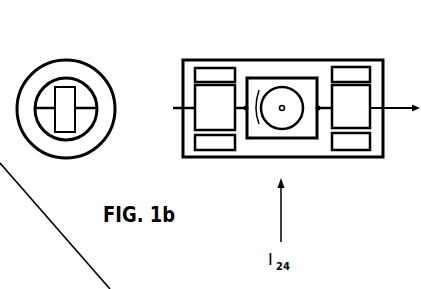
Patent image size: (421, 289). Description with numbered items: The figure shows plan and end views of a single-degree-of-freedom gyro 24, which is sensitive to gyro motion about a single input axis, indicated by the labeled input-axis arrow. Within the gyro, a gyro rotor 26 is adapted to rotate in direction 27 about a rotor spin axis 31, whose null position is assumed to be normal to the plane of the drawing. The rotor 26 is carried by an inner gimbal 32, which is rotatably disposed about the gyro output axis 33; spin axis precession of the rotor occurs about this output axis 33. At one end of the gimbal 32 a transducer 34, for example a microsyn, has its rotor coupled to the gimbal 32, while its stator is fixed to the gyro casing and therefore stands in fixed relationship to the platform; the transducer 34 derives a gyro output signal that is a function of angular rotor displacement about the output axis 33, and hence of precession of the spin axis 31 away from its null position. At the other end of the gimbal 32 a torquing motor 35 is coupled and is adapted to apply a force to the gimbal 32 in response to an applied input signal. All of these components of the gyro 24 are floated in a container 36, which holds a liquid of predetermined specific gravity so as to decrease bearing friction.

The gyro 24 is at (76, 46).
The gyro rotor 26 is at (292, 77).
The direction 27 is at (258, 138).
The rotor spin axis 31 is at (283, 110).
The inner gimbal 32 is at (255, 78).
The gyro output axis 33 is at (400, 110).
The transducer 34 is at (343, 67).
The torquing motor 35 is at (213, 67).
The container 36 is at (350, 151).